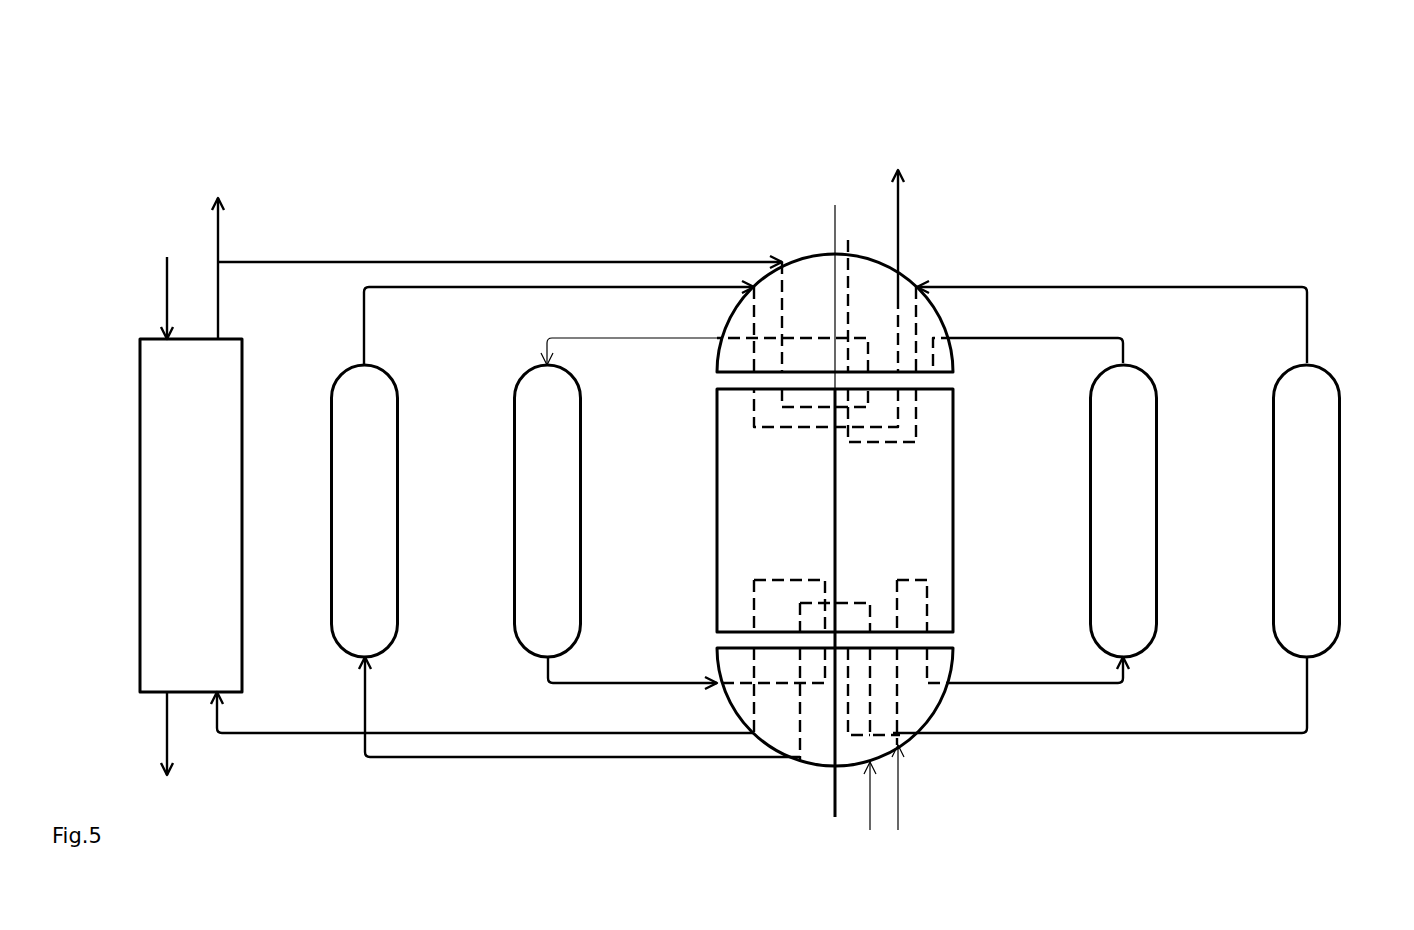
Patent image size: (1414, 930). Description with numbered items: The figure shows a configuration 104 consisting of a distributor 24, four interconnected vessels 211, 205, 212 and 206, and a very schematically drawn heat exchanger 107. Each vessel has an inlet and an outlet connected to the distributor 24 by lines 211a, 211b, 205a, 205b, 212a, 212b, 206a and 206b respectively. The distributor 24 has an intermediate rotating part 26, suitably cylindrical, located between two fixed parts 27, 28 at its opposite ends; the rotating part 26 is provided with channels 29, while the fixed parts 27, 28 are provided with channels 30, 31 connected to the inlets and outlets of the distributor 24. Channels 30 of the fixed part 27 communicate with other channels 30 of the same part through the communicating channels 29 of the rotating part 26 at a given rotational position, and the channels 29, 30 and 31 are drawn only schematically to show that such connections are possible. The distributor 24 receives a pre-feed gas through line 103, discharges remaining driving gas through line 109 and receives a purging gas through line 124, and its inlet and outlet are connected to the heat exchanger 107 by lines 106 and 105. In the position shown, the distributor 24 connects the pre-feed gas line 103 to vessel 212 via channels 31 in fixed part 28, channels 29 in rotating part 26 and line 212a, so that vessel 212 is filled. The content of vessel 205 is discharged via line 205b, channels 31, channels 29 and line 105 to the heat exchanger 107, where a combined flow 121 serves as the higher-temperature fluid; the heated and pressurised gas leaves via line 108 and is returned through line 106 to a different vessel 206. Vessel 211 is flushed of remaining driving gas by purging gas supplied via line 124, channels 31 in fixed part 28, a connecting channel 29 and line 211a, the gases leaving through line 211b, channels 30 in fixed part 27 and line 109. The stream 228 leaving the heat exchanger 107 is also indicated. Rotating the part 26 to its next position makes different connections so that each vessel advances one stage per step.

The configuration 104 is at (1188, 117).
The heat exchanger 107 is at (243, 410).
The combined flow 121 is at (165, 283).
The line for compressed gas 108 is at (218, 237).
The bottom product stream 228 is at (163, 737).
The line 106 is at (320, 262).
The line 105 is at (282, 735).
The vessel 211 is at (397, 553).
The line 211a is at (436, 760).
The line 211b is at (425, 290).
The vessel 205 is at (582, 553).
The line 205a is at (688, 340).
The line 205b is at (603, 680).
The vessel 212 is at (1157, 553).
The line 212a is at (990, 683).
The line 212b is at (982, 338).
The vessel 206 is at (1340, 553).
The line 206a is at (1225, 735).
The line 206b is at (1237, 284).
The intermediate rotating part 26 is at (953, 510).
The fixed part 27 is at (800, 260).
The fixed part 28 is at (802, 762).
The line for remaining driving gas 109 is at (898, 230).
The channels 30 is at (898, 295).
The distributor 24 is at (875, 260).
The channels 29 is at (815, 578).
The channels 31 is at (858, 735).
The line for pre-feed gas 103 is at (898, 777).
The line for purging gas 124 is at (872, 813).